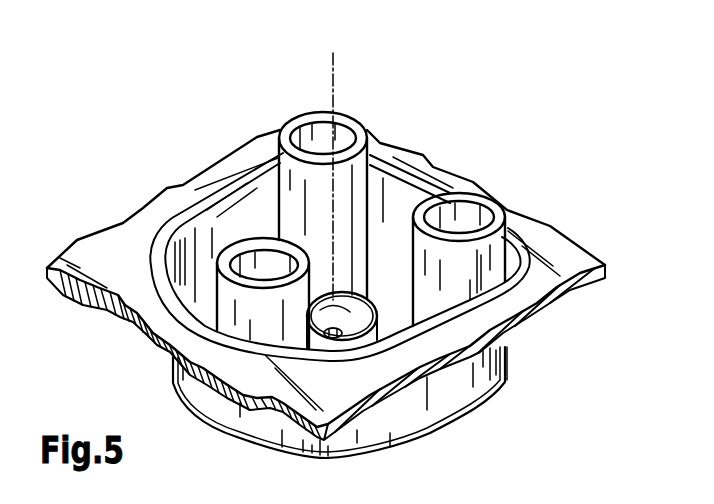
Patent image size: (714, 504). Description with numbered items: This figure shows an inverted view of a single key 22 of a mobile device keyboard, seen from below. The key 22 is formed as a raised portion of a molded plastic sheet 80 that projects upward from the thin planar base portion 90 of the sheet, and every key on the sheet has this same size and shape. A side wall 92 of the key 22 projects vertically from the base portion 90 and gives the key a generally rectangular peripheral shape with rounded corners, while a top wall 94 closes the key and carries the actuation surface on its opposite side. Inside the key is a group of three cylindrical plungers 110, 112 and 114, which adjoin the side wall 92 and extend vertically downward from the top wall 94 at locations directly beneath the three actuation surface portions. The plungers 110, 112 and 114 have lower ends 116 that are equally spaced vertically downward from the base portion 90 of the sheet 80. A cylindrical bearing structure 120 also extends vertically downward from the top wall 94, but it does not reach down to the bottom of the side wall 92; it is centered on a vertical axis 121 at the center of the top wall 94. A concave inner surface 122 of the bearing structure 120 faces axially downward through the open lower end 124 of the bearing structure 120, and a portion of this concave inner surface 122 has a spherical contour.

The key 22 is at (210, 393).
The molded plastic sheet 80 is at (100, 255).
The base portion 90 is at (573, 260).
The side wall 92 is at (440, 397).
The top wall 94 is at (487, 332).
The cylindrical plunger 110 is at (182, 278).
The cylindrical plunger 112 is at (280, 190).
The cylindrical plunger 114 is at (483, 257).
The lower ends 116 is at (303, 120).
The cylindrical bearing structure 120 is at (358, 350).
The vertical axis 121 is at (336, 82).
The concave inner surface 122 is at (298, 325).
The open lower end 124 is at (366, 315).